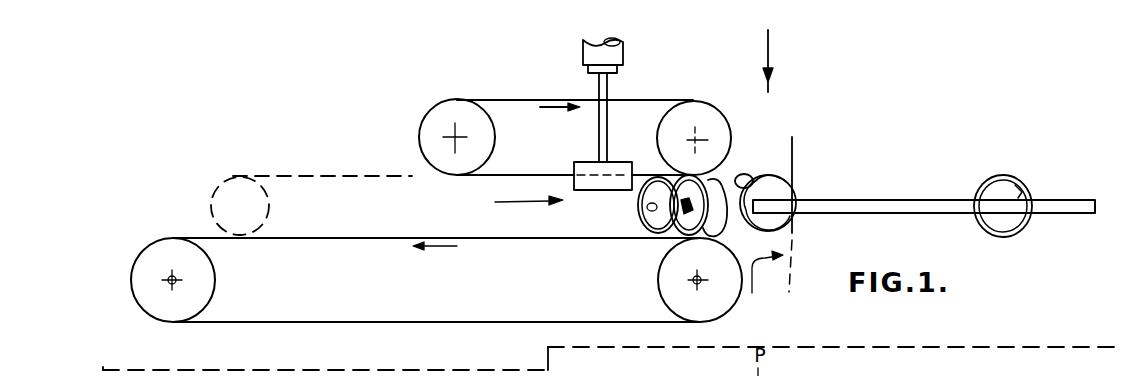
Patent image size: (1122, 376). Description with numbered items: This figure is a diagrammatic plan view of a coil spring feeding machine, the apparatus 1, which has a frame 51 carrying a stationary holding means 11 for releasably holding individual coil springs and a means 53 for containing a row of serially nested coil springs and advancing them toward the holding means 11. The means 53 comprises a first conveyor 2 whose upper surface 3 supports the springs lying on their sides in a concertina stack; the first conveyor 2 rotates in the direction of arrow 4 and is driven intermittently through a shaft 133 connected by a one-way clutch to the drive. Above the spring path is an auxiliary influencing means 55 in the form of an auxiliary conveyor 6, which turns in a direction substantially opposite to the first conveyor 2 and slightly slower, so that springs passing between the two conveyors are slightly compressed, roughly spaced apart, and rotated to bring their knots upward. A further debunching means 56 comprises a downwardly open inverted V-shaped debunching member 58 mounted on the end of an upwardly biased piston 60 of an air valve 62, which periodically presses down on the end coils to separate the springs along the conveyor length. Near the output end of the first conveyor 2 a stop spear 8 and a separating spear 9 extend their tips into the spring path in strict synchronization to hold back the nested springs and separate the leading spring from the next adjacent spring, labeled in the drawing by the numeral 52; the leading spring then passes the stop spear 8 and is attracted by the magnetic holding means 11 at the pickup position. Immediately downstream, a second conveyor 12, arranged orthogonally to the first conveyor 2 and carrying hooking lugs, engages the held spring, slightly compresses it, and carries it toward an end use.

The apparatus 1 is at (776, 127).
The first conveyor 2 is at (383, 322).
The upper surface 3 is at (372, 238).
The arrow 4 is at (400, 246).
The auxiliary conveyor 6 is at (627, 100).
The stop spear 8 is at (655, 245).
The separating spear 9 is at (645, 242).
The holding means 11 is at (793, 172).
The second conveyor 12 is at (895, 208).
The frame 51 is at (738, 230).
The ring 52 is at (640, 228).
The means for containing and advancing coil springs 53 is at (408, 193).
The auxiliary influencing means 55 is at (511, 93).
The debunching means 56 is at (562, 163).
The debunching member 58 is at (595, 190).
The piston 60 is at (599, 125).
The air valve 62 is at (583, 50).
The shaft 133 is at (697, 281).